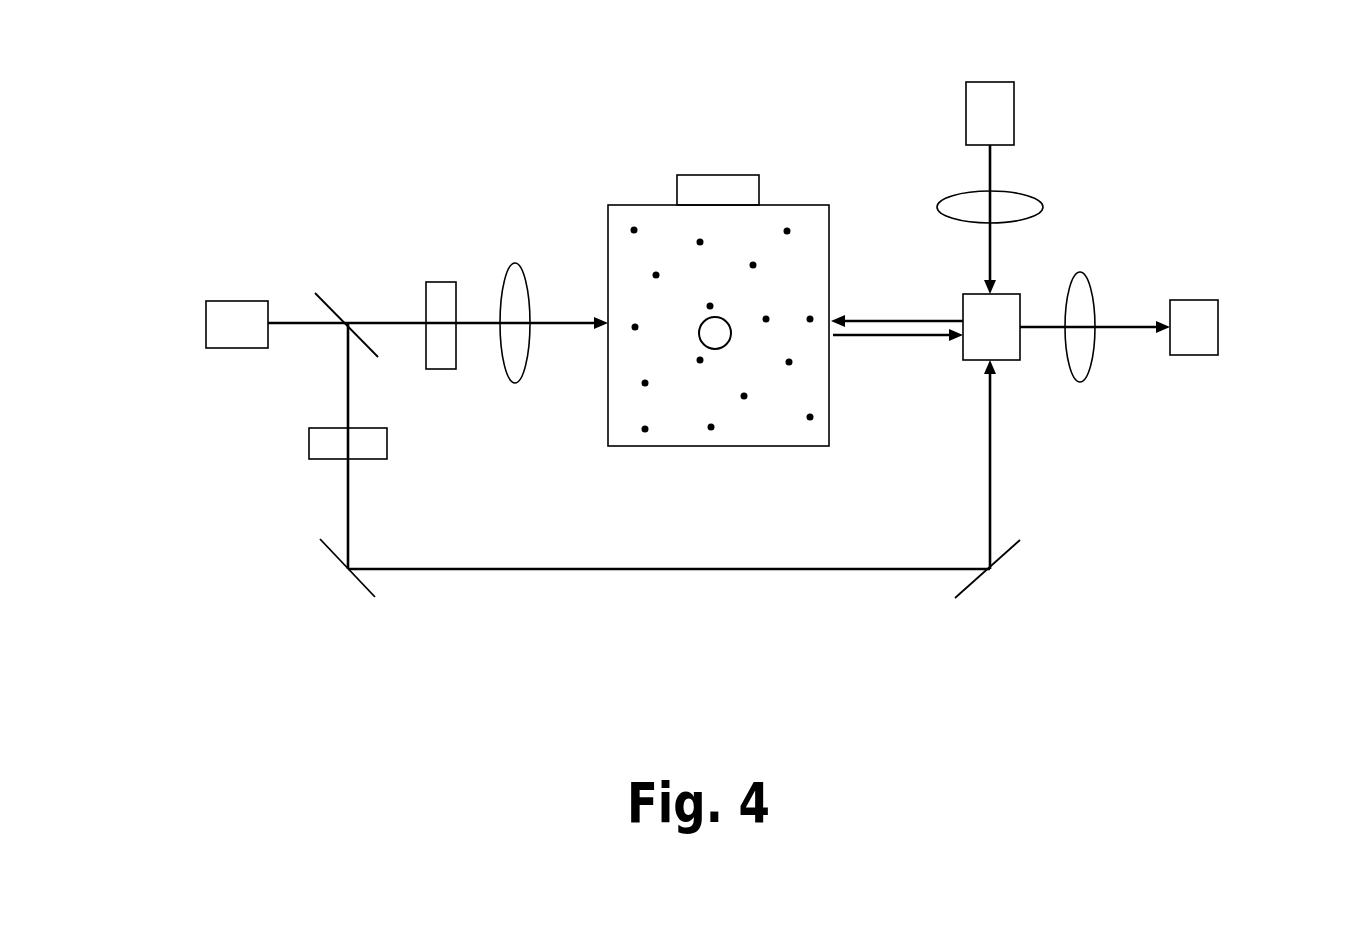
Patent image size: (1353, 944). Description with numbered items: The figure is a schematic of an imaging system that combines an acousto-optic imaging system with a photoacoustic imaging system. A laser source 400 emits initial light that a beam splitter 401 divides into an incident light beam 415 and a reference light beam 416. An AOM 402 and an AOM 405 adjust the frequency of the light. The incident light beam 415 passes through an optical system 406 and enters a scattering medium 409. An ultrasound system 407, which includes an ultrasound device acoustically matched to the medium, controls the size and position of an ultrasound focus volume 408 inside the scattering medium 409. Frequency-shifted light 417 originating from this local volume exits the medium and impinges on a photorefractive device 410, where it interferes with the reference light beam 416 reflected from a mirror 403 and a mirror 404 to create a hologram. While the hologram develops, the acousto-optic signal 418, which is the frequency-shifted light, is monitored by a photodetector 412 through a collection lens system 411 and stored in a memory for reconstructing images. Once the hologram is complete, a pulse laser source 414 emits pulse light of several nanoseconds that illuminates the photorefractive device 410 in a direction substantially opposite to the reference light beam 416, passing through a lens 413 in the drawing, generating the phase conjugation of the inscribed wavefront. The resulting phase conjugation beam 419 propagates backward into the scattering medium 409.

The laser source 400 is at (213, 327).
The beam splitter 401 is at (335, 300).
The AOM 402 is at (328, 440).
The mirror 403 is at (327, 553).
The mirror 404 is at (1008, 560).
The AOM 405 is at (440, 293).
The optical system 406 is at (516, 378).
The ultrasound system 407 is at (700, 183).
The ultrasound focus volume 408 is at (718, 330).
The scattering medium 409 is at (762, 428).
The photorefractive device 410 is at (993, 350).
The collection lens system 411 is at (1082, 357).
The photodetector 412 is at (1203, 342).
The lens 413 is at (1028, 207).
The pulse laser source 414 is at (993, 108).
The incident light beam 415 is at (568, 320).
The reference light beam 416 is at (990, 450).
The frequency-shifted light 417 is at (893, 337).
The acousto-optic signal 418 is at (1133, 327).
The phase conjugation beam 419 is at (898, 318).